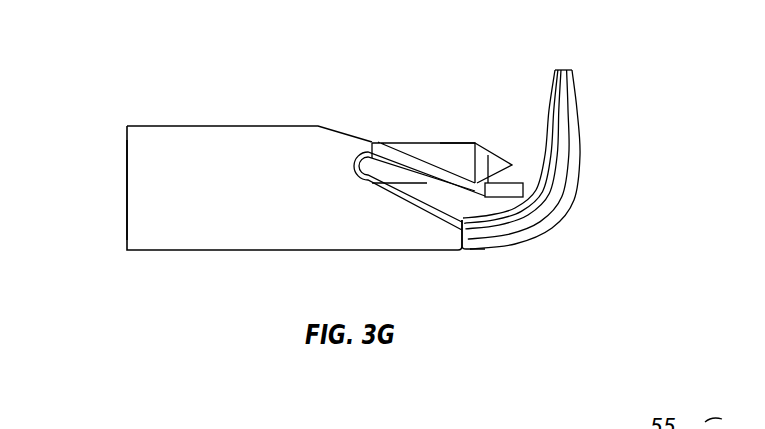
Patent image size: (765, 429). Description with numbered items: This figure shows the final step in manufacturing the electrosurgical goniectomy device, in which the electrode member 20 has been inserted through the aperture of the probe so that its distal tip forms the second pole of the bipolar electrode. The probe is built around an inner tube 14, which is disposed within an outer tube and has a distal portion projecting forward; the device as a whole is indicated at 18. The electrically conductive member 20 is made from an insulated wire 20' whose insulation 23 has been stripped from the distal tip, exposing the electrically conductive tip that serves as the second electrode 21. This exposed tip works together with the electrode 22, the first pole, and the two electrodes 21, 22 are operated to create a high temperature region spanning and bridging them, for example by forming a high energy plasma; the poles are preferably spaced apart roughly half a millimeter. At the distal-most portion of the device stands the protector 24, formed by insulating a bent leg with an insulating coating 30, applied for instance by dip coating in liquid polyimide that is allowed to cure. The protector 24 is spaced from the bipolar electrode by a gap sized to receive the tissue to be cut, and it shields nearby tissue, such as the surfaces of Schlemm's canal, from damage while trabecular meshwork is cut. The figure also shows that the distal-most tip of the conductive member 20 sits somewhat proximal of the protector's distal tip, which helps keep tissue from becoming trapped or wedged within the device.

The inner tube 14 is at (226, 135).
The device / end effector 18 is at (125, 188).
The electrode member 20 is at (423, 111).
The insulated wire 20' is at (419, 152).
The second electrode 21 is at (495, 162).
The electrode 22 is at (514, 192).
The insulation 23 is at (482, 142).
The protector 24 is at (579, 104).
The insulating coating 30 is at (486, 240).